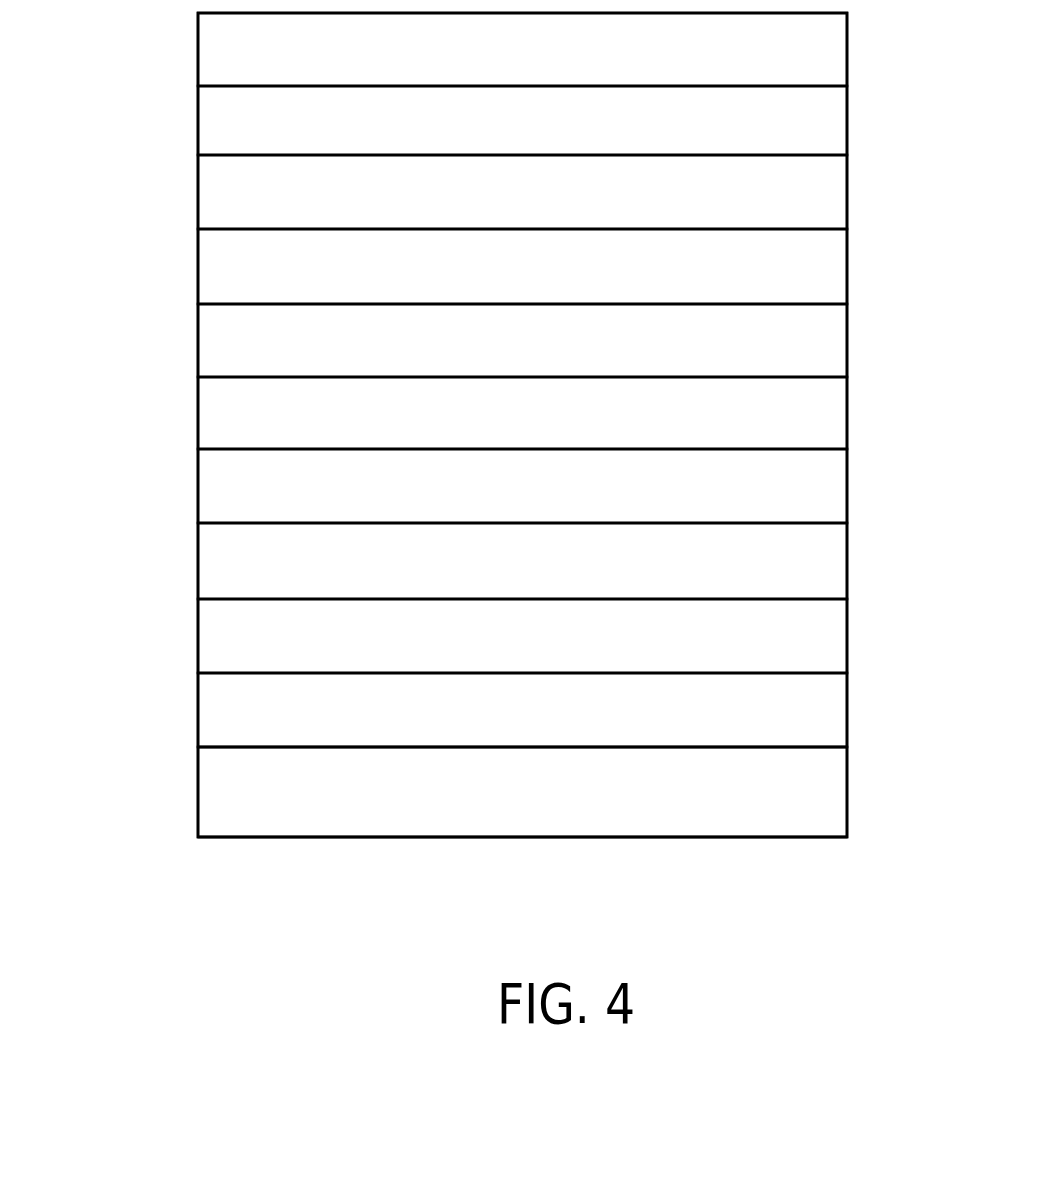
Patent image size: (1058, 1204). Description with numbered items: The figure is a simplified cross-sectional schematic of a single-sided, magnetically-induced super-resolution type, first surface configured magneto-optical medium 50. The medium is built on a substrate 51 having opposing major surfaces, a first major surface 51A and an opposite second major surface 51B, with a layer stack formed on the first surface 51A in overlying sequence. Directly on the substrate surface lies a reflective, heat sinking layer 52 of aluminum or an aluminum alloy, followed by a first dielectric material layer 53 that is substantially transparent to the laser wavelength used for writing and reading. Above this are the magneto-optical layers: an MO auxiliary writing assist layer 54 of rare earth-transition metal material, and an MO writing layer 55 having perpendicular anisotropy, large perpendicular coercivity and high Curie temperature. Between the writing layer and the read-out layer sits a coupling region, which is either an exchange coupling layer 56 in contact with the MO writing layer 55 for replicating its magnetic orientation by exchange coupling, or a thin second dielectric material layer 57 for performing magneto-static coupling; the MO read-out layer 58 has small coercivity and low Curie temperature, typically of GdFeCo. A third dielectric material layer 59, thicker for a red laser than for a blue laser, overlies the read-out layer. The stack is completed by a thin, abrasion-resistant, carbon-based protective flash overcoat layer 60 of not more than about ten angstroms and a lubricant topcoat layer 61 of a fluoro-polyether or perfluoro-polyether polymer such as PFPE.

The magneto-optical medium 50 is at (122, 133).
The substrate 51 is at (540, 812).
The first major surface of substrate 51A is at (825, 751).
The second major surface of substrate 51B is at (822, 836).
The reflective, heat sinking layer 52 is at (825, 711).
The first dielectric material layer 53 is at (825, 641).
The MO auxiliary writing assist layer 54 is at (825, 565).
The MO writing layer 55 is at (825, 491).
The exchange coupling layer 56 is at (825, 421).
The second dielectric material layer 57 is at (825, 350).
The MO read-out layer 58 is at (825, 276).
The third dielectric material layer 59 is at (825, 195).
The protective flash overcoat layer 60 is at (825, 126).
The lubricant topcoat layer 61 is at (825, 53).